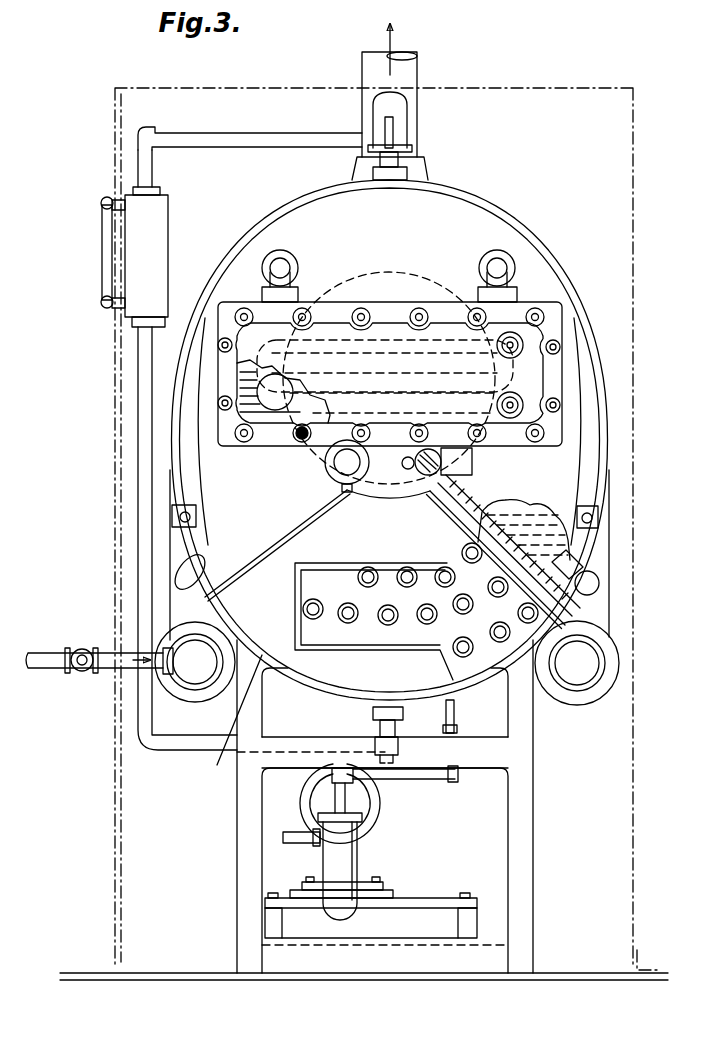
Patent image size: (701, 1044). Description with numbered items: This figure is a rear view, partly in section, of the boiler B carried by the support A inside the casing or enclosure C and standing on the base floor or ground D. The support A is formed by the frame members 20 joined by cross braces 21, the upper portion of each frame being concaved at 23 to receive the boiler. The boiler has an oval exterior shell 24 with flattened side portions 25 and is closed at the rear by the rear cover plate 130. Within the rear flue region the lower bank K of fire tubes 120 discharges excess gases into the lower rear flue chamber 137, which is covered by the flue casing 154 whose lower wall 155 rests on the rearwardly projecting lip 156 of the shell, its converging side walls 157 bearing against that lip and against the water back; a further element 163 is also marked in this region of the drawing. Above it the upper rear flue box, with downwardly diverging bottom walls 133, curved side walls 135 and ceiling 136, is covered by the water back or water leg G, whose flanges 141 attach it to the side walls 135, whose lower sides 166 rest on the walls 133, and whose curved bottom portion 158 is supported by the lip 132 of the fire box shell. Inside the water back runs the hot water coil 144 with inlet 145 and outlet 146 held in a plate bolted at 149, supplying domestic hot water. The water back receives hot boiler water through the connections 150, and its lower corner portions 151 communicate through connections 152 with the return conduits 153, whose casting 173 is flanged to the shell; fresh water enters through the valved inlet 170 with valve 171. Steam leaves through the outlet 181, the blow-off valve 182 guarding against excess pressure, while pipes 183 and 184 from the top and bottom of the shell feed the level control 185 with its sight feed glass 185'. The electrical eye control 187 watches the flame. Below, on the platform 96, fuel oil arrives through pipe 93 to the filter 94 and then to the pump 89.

The frame members 20 is at (242, 843).
The cross braces 21 is at (466, 771).
The concaved upper portion 23 is at (456, 727).
The exterior shell 24 is at (548, 241).
The flattened side portions 25 is at (611, 411).
The pump 89 is at (381, 814).
The pipe 93 is at (291, 845).
The filter 94 is at (345, 869).
The platform 96 is at (437, 897).
The fire tubes 120 is at (455, 614).
The rear cover plate 130 is at (458, 198).
The lip 132 is at (391, 506).
The bottom walls 133 is at (307, 531).
The side walls 135 is at (600, 352).
The ceiling 136 is at (382, 272).
The lower rear flue chamber 137 is at (231, 723).
The flanges 141 is at (381, 336).
The hot water coil 144 is at (384, 340).
The inlet 145 is at (462, 470).
The outlet 146 is at (578, 341).
The bolts 149 is at (222, 339).
The connections 150 is at (285, 262).
The lower corner portions 151 is at (500, 566).
The connections 152 is at (179, 584).
The conduits 153 is at (188, 668).
The flue casing 154 is at (421, 686).
The lower wall 155 is at (513, 682).
The lip 156 is at (368, 694).
The converging side walls 157 is at (488, 532).
The bottom portion 158 is at (233, 566).
The heat exchanger wall 163 is at (310, 633).
The lower sides 166 is at (546, 549).
The fresh water inlet 170 is at (42, 670).
The valve 171 is at (82, 649).
The return conduit casting 173 is at (168, 557).
The steam outlet 181 is at (410, 74).
The blow-off valve 182 is at (399, 121).
The pipe 183 is at (302, 134).
The pipe 184 is at (138, 378).
The level control 185 is at (172, 261).
The sight feed glass 185' is at (85, 252).
The electrical eye control 187 is at (340, 469).
The support A is at (378, 806).
The boiler B is at (513, 217).
The casing C is at (637, 470).
The base floor D is at (405, 978).
The water leg G is at (214, 476).
The rear-pass fire tubes K is at (349, 634).